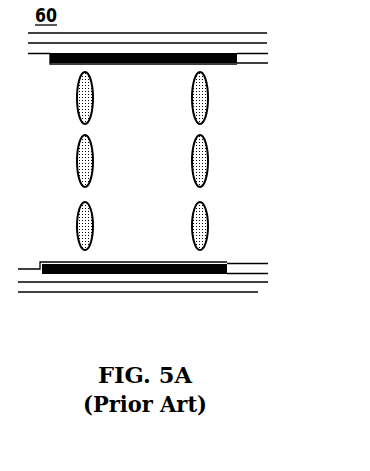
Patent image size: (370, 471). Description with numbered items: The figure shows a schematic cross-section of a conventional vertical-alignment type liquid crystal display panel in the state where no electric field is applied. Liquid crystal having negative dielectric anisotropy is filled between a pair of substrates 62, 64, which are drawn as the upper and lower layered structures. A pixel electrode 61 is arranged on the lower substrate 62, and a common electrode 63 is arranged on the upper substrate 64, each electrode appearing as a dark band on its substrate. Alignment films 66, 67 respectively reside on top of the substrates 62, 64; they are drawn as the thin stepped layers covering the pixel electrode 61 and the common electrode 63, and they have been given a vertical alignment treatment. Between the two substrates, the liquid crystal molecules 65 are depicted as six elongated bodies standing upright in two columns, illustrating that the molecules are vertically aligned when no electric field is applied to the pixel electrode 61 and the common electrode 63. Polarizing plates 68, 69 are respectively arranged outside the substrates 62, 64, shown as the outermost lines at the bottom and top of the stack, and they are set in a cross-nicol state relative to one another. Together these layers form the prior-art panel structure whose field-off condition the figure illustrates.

The polarizing plate 69 is at (267, 33).
The substrate 64 is at (267, 43).
The common electrode 63 is at (242, 60).
The alignment film 67 is at (240, 64).
The liquid crystal molecules 65 is at (208, 165).
The alignment film 66 is at (227, 262).
The pixel electrode 61 is at (250, 264).
The substrate 62 is at (265, 282).
The polarizing plate 68 is at (258, 293).